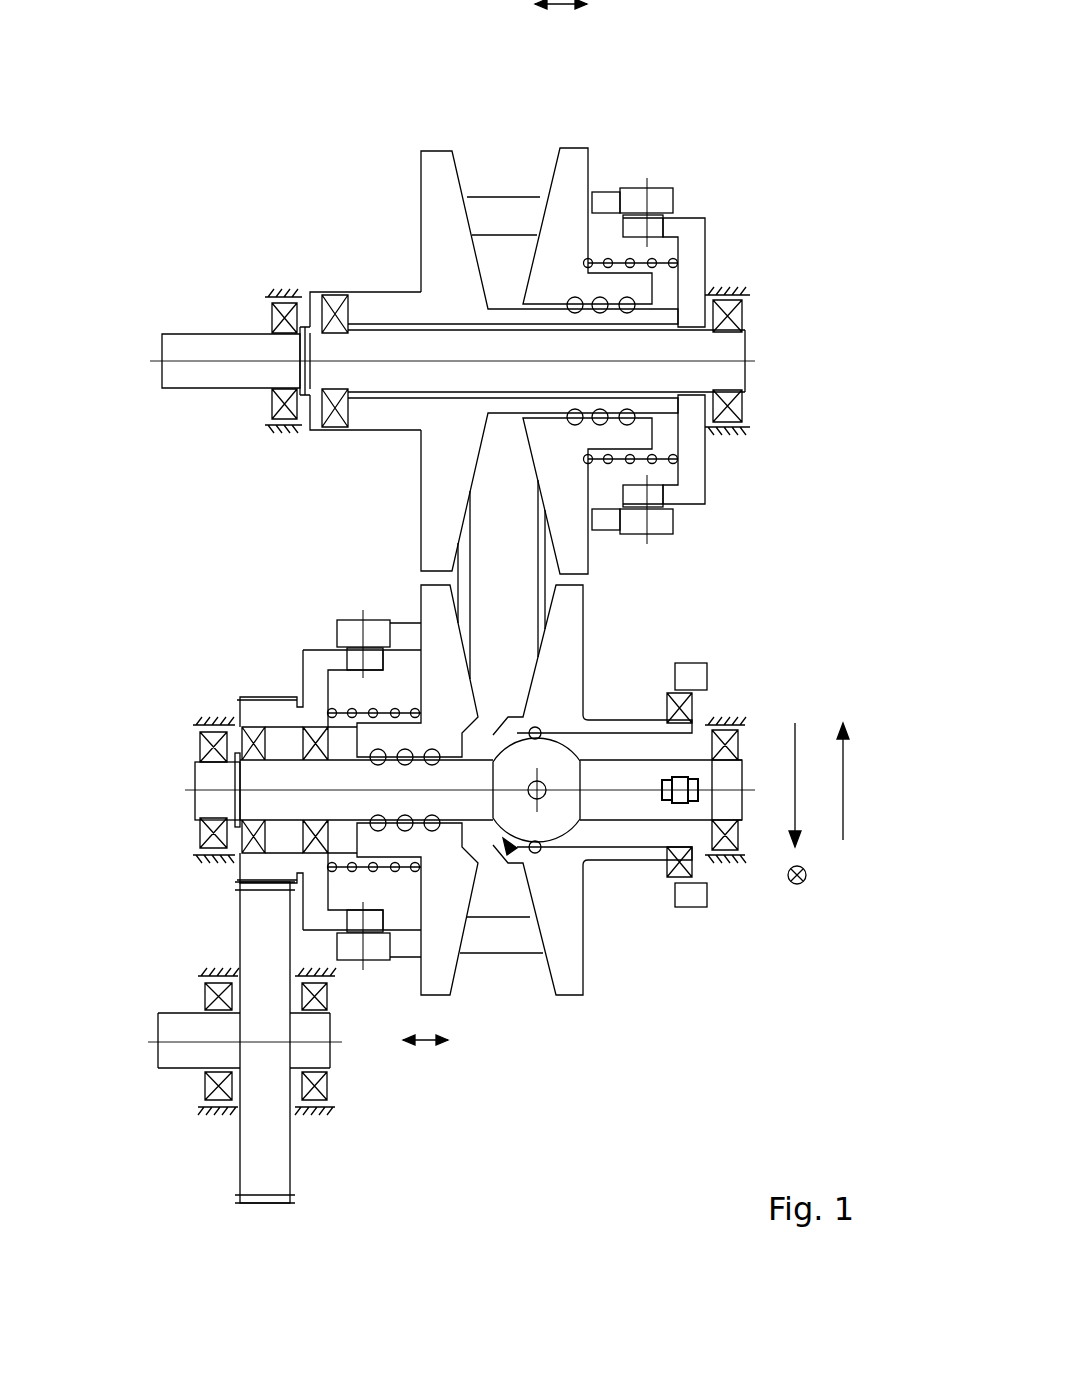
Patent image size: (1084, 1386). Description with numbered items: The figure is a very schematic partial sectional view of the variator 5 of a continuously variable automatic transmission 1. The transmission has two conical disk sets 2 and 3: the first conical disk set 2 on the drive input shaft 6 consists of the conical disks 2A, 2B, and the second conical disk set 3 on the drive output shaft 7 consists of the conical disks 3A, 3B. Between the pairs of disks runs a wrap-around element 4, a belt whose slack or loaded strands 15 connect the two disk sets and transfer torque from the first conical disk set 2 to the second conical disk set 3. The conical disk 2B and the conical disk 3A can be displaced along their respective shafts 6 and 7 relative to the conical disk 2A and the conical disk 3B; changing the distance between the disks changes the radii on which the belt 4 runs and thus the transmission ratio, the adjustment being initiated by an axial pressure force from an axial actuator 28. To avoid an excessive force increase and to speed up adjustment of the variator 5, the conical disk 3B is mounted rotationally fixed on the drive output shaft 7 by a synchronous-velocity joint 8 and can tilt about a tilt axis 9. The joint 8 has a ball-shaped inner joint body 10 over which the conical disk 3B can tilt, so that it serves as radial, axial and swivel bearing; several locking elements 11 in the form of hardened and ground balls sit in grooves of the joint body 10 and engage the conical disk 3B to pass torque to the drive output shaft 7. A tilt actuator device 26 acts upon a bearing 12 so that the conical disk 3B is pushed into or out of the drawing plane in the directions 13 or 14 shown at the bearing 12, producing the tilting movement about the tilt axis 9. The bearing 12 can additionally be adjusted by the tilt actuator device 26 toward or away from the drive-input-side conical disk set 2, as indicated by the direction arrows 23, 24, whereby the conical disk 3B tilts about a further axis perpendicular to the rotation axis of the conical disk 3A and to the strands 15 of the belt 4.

The automatic transmission 1 is at (502, 662).
The first conical disk set 2 is at (441, 287).
The conical disk 2A is at (445, 170).
The conical disk 2B is at (560, 165).
The second conical disk set 3 is at (502, 928).
The conical disk 3A is at (438, 615).
The conical disk 3B is at (573, 622).
The wrap-around element 4 is at (496, 195).
The variator 5 is at (356, 228).
The drive input shaft 6 is at (178, 352).
The drive output shaft 7 is at (262, 792).
The synchronous-velocity joint 8 is at (505, 842).
The tilt axis 9 is at (585, 835).
The joint body 10 is at (563, 770).
The locking elements 11 is at (537, 727).
The bearing 12 is at (692, 694).
The direction 13 is at (800, 893).
The direction 14 is at (830, 897).
The strands 15 is at (500, 539).
The direction arrow 23 is at (795, 745).
The direction arrow 24 is at (843, 828).
The tilt actuator device 26 is at (708, 675).
The axial actuator 28 is at (662, 198).